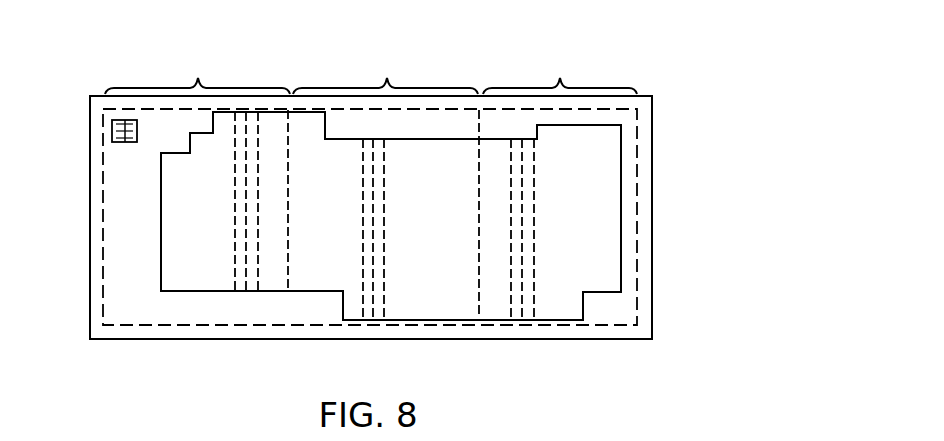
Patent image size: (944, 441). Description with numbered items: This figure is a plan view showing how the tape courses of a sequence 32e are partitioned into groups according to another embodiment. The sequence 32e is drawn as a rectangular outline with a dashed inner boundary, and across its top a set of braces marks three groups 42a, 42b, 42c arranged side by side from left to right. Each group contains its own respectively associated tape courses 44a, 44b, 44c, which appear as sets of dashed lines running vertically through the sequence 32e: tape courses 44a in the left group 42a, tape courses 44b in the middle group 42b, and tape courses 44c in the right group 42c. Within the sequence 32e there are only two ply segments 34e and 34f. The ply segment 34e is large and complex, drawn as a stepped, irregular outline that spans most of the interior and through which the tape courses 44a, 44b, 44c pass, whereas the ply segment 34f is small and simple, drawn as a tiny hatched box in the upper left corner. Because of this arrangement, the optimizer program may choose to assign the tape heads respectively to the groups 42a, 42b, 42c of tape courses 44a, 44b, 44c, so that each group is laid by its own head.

The sequence 32e is at (673, 73).
The ply segment 34e is at (582, 180).
The ply segment 34f is at (113, 128).
The group 42a is at (197, 74).
The group 42b is at (385, 74).
The group 42c is at (560, 74).
The tape courses 44a is at (241, 225).
The tape courses 44b is at (379, 258).
The tape courses 44c is at (522, 253).